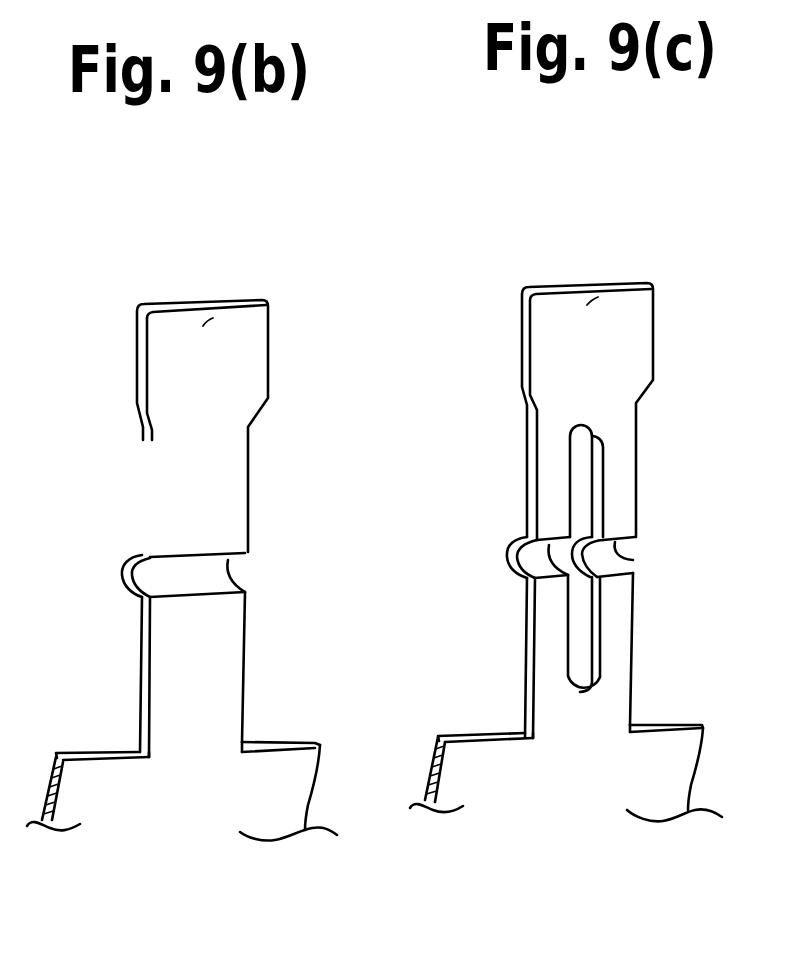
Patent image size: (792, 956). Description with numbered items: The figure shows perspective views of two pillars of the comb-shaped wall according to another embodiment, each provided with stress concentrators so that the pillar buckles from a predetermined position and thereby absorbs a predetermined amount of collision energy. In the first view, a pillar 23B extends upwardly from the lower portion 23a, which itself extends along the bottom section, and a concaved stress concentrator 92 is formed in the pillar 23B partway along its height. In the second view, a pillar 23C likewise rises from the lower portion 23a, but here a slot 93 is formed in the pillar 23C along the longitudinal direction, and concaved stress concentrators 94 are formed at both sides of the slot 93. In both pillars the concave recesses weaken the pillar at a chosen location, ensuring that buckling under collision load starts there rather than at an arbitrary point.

In FIG. 9B, the pillar 23B is at (215, 303).
In FIG. 9C, the pillar 23C is at (602, 280).
In FIG. 9B, the lower portion 23a is at (117, 747).
In FIG. 9C, the lower portion 23a is at (480, 732).
In FIG. 9B, the concaved stress concentrator 92 is at (128, 557).
In FIG. 9C, the slot 93 is at (576, 637).
In FIG. 9C, the concaved stress concentrators 94 is at (512, 538).